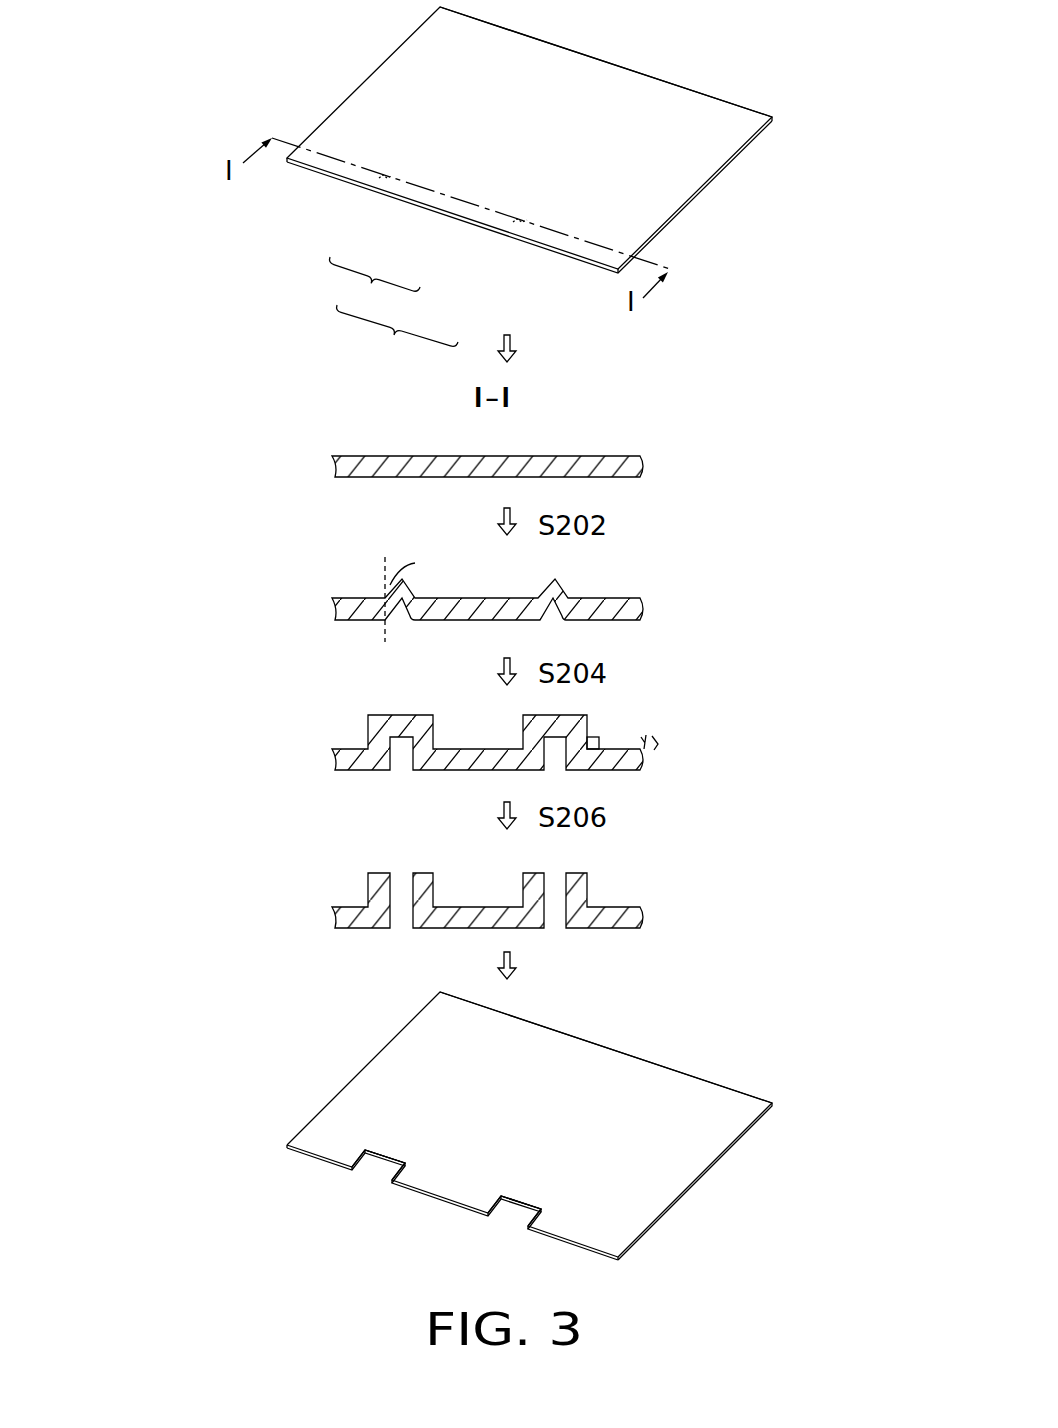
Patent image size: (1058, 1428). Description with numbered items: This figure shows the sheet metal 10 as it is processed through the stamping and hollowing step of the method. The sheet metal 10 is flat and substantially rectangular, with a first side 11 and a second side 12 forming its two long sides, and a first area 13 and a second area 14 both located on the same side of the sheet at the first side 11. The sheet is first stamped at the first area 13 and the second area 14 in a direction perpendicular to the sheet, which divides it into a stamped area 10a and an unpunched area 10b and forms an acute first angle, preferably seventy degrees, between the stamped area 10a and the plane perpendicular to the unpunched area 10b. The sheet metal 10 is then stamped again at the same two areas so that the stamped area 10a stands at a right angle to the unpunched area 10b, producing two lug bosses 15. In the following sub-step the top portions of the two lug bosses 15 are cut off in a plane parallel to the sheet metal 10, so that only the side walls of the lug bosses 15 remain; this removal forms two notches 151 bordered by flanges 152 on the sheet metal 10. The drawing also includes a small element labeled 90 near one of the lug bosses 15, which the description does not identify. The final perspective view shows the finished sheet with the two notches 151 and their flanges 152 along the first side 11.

The sheet metal 10 is at (395, 337).
The stamped area 10a is at (337, 596).
The unpunched area 10b is at (576, 216).
The first side 11 is at (336, 183).
The second side 12 is at (582, 44).
The first area 13 is at (384, 166).
The second area 14 is at (519, 209).
The lug boss 15 is at (400, 588).
The cutting tool 90 is at (599, 737).
The notch 151 is at (376, 1176).
The flange 152 is at (425, 888).